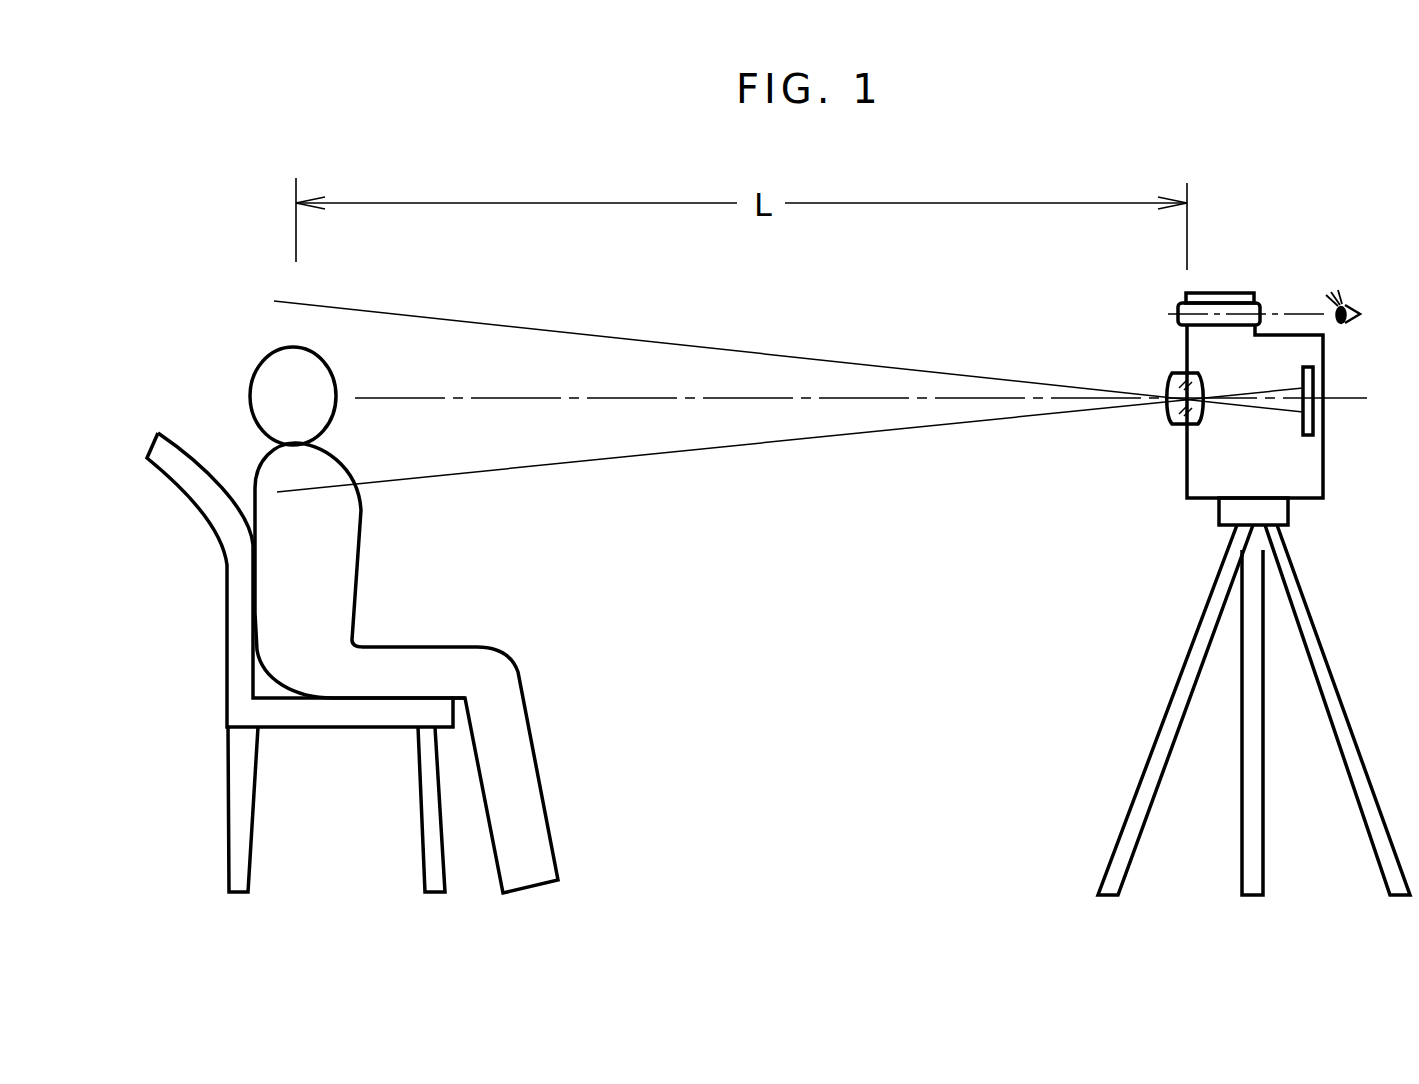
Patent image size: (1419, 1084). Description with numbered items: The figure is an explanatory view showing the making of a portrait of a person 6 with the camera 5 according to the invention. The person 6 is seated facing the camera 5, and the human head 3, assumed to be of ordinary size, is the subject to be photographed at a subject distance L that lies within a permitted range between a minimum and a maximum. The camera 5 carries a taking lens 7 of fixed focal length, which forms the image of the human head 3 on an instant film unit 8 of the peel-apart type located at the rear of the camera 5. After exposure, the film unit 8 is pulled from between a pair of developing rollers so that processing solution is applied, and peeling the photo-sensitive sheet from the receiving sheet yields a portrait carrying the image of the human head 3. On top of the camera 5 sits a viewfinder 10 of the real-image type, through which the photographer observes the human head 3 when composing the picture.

The human head 3 is at (263, 385).
The camera 5 is at (1307, 468).
The person 6 is at (347, 530).
The taking lens 7 is at (1163, 415).
The instant film unit 8 is at (1313, 373).
The viewfinder 10 is at (1220, 307).